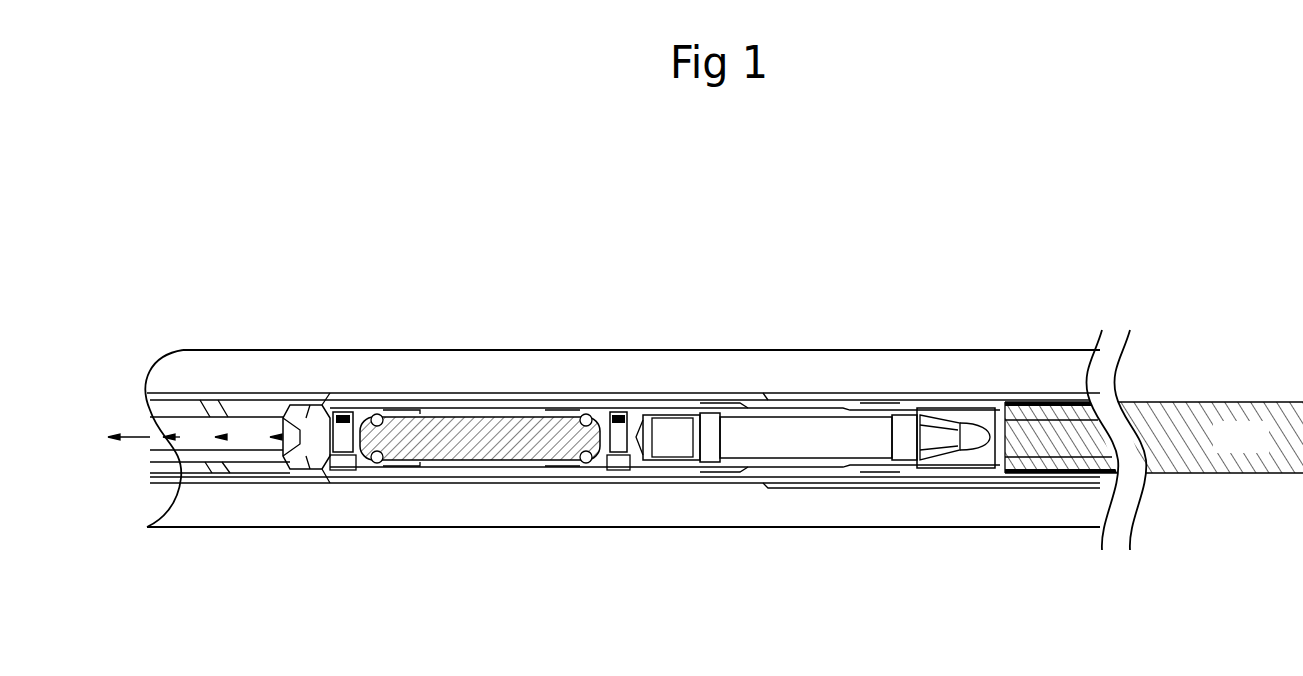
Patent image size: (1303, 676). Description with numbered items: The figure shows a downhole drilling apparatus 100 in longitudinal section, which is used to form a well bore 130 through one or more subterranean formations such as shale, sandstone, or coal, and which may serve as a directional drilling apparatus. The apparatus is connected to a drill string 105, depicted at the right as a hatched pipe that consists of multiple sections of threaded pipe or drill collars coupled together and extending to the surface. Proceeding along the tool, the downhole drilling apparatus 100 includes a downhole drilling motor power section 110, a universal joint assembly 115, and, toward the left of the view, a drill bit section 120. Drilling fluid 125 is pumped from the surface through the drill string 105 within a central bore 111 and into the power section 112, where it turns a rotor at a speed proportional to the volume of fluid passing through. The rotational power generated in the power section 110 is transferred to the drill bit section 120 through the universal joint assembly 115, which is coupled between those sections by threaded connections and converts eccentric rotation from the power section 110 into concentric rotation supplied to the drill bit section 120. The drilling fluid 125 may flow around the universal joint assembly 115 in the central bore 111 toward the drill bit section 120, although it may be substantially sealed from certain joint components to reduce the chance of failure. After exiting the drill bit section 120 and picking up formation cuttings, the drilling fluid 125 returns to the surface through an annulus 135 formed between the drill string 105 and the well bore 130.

The downhole drilling apparatus 100 is at (930, 162).
The drill string 105 is at (1208, 399).
The downhole drilling motor power section 110 is at (1018, 460).
The central bore 111 is at (525, 470).
The power section 112 is at (685, 492).
The universal joint assembly 115 is at (477, 475).
The drill bit section 120 is at (252, 470).
The drilling fluid 125 is at (275, 432).
The well bore 130 is at (381, 348).
The annulus 135 is at (459, 366).